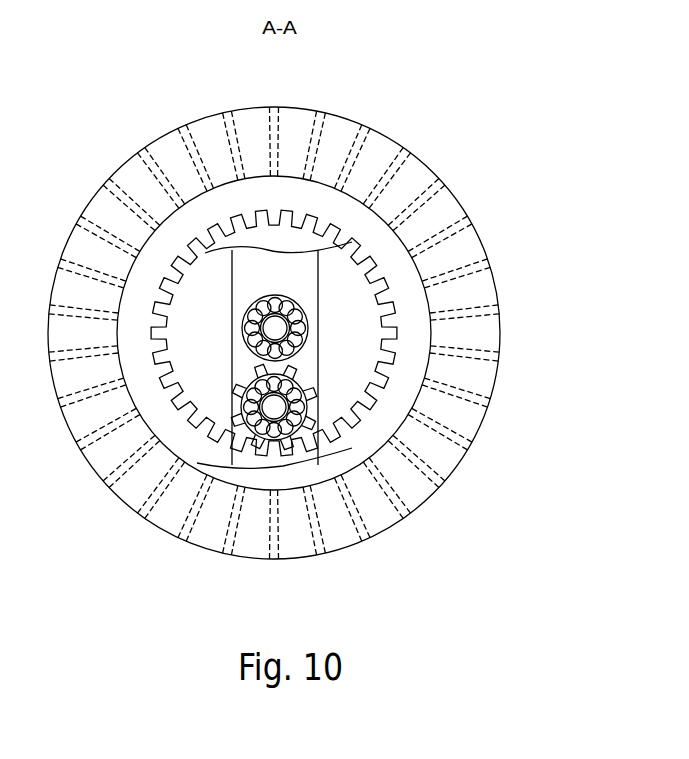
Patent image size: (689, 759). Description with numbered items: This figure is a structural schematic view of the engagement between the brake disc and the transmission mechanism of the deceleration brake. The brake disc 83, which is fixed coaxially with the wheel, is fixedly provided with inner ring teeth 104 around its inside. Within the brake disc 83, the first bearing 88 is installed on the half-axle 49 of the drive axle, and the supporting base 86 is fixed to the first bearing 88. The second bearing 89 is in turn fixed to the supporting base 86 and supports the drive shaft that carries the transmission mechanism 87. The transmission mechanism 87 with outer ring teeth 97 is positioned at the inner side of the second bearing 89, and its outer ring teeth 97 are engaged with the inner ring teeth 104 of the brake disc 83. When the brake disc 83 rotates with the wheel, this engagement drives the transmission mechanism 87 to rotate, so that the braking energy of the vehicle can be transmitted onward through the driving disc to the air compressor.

The brake disc 83 is at (370, 500).
The inner ring teeth 104 is at (356, 409).
The supporting base 86 is at (292, 277).
The first bearing 88 is at (396, 280).
The half-axle 49 is at (277, 328).
The second bearing 89 is at (390, 445).
The outer ring teeth 97 is at (317, 413).
The transmission mechanism 87 is at (274, 407).